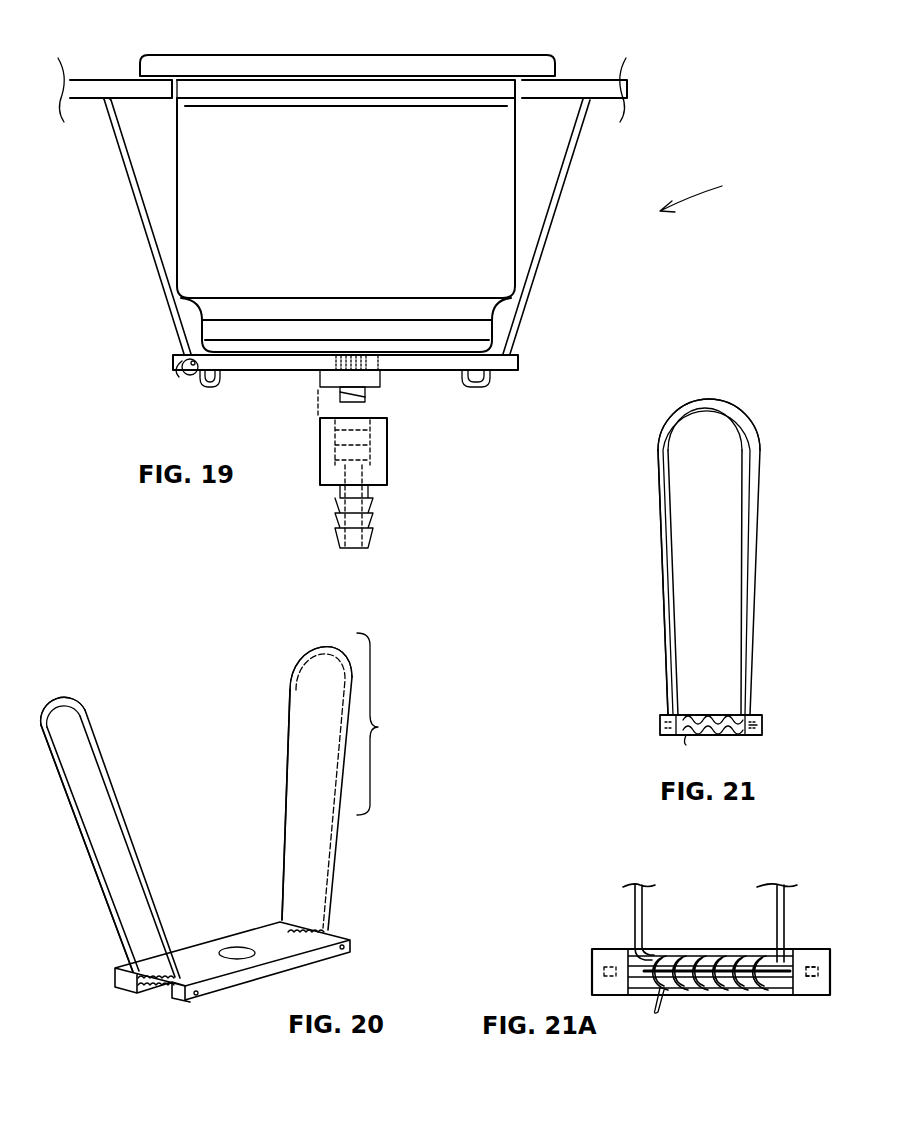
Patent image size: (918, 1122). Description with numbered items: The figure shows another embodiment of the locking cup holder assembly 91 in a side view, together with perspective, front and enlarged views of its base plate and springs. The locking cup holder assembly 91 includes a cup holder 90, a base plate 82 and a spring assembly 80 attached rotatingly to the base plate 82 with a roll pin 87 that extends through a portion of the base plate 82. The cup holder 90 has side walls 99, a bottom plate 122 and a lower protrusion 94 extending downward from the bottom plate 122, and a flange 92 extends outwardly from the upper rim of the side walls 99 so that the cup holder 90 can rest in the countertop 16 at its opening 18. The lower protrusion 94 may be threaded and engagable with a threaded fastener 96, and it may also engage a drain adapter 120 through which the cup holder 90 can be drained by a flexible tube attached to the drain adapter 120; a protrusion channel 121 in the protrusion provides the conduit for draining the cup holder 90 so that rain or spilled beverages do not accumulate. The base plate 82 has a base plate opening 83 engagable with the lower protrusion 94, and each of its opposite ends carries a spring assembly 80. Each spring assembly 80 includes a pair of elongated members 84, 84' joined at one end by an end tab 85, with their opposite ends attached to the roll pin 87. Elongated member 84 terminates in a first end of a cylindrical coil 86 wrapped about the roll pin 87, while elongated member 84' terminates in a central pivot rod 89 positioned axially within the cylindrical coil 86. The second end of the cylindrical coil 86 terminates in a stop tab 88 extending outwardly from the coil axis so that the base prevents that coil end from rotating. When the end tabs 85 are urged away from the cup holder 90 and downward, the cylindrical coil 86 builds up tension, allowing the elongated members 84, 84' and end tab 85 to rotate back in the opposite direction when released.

In FIG. 19, the countertop 16 is at (105, 95).
In FIG. 19, the opening in countertop 18 is at (168, 88).
In FIG. 20, the spring assembly 80 is at (387, 724).
In FIG. 19, the base plate 82 is at (292, 355).
In FIG. 20, the base plate 82 is at (262, 945).
In FIG. 21, the base plate 82 is at (752, 715).
In FIG. 19, the base plate opening 83 is at (380, 355).
In FIG. 20, the base plate opening 83 is at (240, 960).
In FIG. 19, the elongated member 84 is at (147, 226).
In FIG. 20, the elongated member 84 is at (208, 812).
In FIG. 21, the elongated member 84 is at (737, 557).
In FIG. 21A, the elongated member 84 is at (802, 918).
In FIG. 20, the elongated member 84' is at (165, 831).
In FIG. 21, the elongated member 84' is at (631, 582).
In FIG. 21A, the elongated member 84' is at (615, 917).
In FIG. 19, the end tab 85 is at (103, 105).
In FIG. 20, the end tab 85 is at (55, 698).
In FIG. 21, the end tab 85 is at (735, 395).
In FIG. 19, the cylindrical coil 86 is at (180, 358).
In FIG. 20, the cylindrical coil 86 is at (150, 968).
In FIG. 21, the cylindrical coil 86 is at (707, 715).
In FIG. 21A, the cylindrical coil 86 is at (745, 993).
In FIG. 19, the roll pin 87 is at (186, 372).
In FIG. 20, the roll pin 87 is at (345, 947).
In FIG. 21, the roll pin 87 is at (760, 735).
In FIG. 21A, the roll pin 87 is at (782, 993).
In FIG. 19, the stop tab 88 is at (232, 374).
In FIG. 21A, the stop tab 88 is at (659, 1010).
In FIG. 21A, the central pivot rod 89 is at (710, 950).
In FIG. 19, the cup holder 90 is at (380, 176).
In FIG. 19, the locking cup holder assembly 91 is at (708, 193).
In FIG. 19, the flange 92 is at (540, 60).
In FIG. 19, the lower protrusion 94 is at (325, 380).
In FIG. 19, the threaded fastener 96 is at (480, 387).
In FIG. 19, the side walls 99 is at (515, 165).
In FIG. 19, the drain adapter 120 is at (390, 452).
In FIG. 19, the protrusion channel 121 is at (352, 355).
In FIG. 19, the bottom plate 122 is at (450, 350).